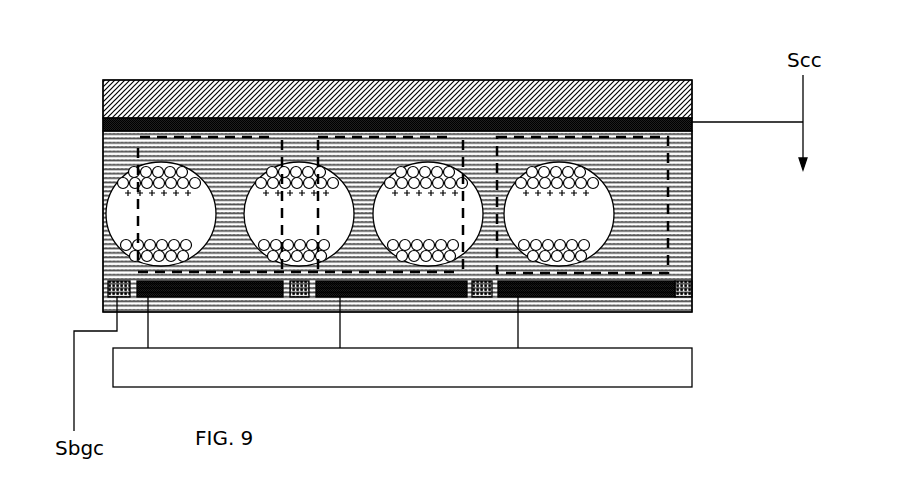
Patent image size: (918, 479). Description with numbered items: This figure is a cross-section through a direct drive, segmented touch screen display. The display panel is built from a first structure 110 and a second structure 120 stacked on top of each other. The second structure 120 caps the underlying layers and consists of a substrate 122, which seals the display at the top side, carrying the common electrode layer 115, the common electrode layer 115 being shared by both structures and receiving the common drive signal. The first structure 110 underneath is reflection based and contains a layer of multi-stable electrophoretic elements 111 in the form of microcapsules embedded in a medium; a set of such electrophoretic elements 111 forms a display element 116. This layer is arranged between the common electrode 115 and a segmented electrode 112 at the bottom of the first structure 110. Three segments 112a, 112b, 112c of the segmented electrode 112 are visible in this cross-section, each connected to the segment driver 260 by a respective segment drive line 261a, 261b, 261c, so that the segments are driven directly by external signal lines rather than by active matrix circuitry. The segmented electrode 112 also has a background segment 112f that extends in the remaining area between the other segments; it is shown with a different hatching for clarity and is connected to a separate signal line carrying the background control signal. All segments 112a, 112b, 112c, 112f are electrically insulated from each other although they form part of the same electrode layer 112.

The second structure 120 is at (406, 98).
The substrate 122 is at (692, 77).
The common electrode layer 115 is at (675, 132).
The first structure 110 is at (437, 250).
The electrophoretic elements 111 is at (668, 198).
The display element 116 is at (463, 163).
The segmented electrode 112 is at (460, 322).
The segment 112a is at (228, 298).
The segment 112b is at (410, 298).
The segment 112c is at (610, 297).
The background segment 112f is at (693, 292).
The segment drive line 261a is at (127, 364).
The segment drive line 261b is at (370, 322).
The segment drive line 261c is at (545, 322).
The segment driver 260 is at (402, 367).